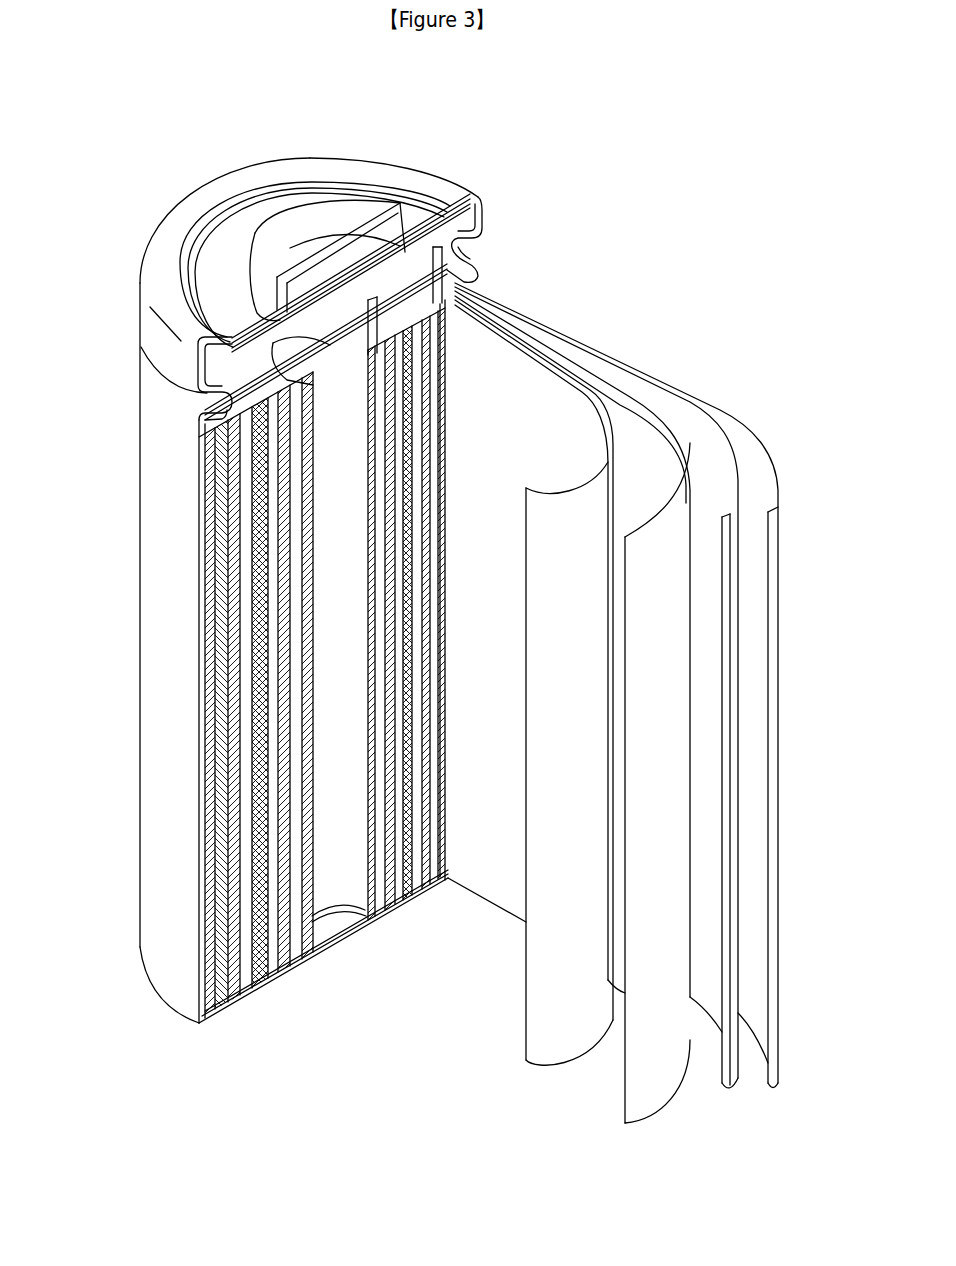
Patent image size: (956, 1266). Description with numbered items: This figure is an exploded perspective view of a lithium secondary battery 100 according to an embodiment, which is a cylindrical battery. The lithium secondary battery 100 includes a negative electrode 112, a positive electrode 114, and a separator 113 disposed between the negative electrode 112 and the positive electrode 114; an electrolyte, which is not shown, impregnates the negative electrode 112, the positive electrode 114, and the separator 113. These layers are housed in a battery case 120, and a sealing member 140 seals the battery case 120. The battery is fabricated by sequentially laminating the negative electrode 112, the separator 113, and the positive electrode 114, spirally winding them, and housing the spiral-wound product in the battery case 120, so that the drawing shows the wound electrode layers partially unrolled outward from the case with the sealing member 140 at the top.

The lithium secondary battery 100 is at (481, 146).
The negative electrode 112 is at (740, 440).
The separator 113 is at (497, 352).
The positive electrode 114 is at (628, 413).
The battery case 120 is at (140, 640).
The sealing member 140 is at (300, 212).